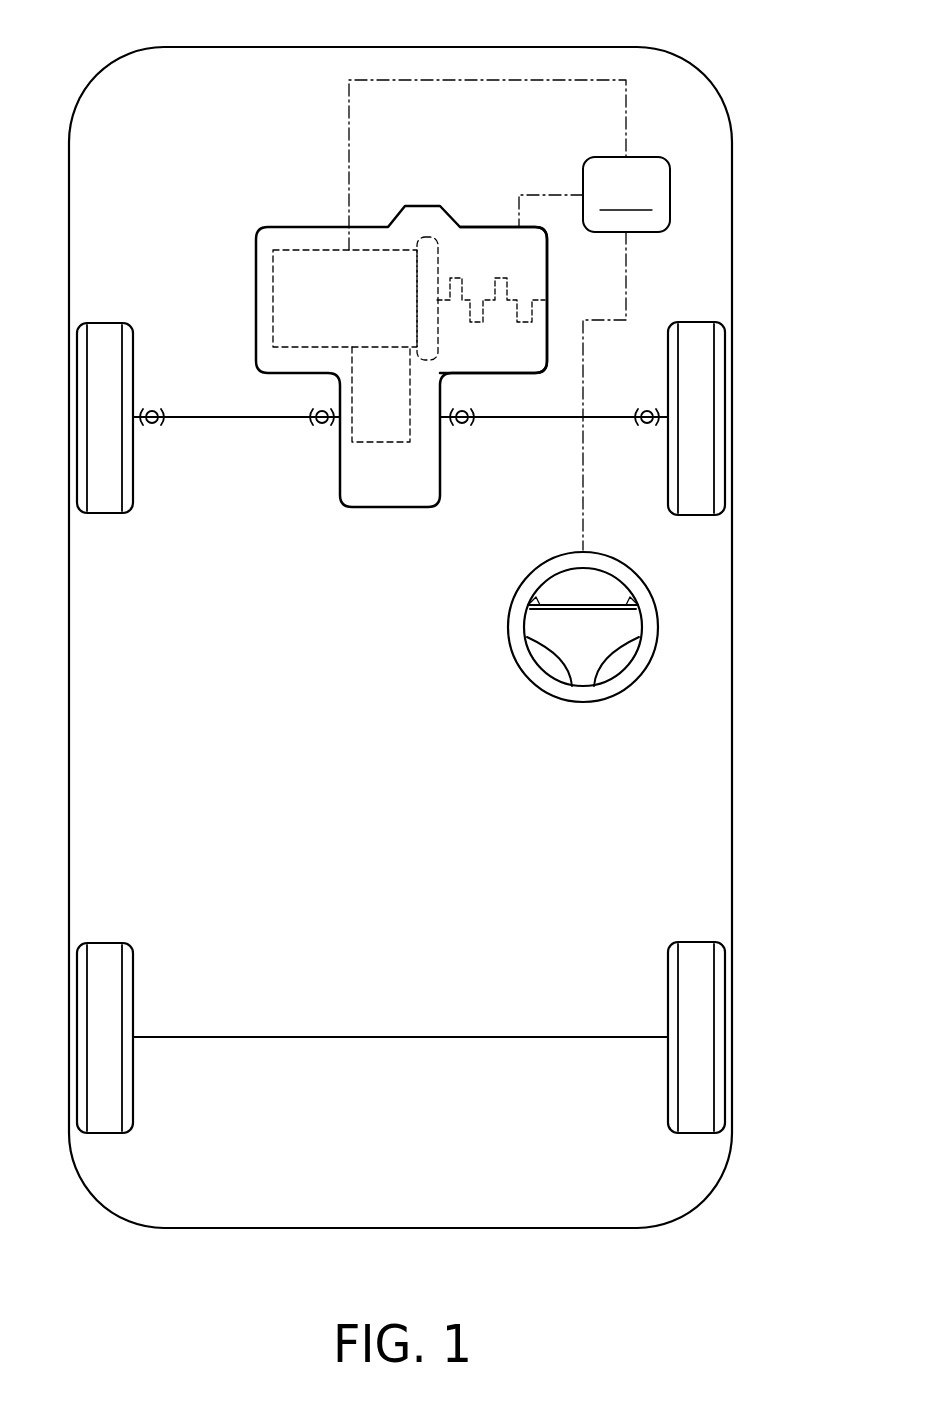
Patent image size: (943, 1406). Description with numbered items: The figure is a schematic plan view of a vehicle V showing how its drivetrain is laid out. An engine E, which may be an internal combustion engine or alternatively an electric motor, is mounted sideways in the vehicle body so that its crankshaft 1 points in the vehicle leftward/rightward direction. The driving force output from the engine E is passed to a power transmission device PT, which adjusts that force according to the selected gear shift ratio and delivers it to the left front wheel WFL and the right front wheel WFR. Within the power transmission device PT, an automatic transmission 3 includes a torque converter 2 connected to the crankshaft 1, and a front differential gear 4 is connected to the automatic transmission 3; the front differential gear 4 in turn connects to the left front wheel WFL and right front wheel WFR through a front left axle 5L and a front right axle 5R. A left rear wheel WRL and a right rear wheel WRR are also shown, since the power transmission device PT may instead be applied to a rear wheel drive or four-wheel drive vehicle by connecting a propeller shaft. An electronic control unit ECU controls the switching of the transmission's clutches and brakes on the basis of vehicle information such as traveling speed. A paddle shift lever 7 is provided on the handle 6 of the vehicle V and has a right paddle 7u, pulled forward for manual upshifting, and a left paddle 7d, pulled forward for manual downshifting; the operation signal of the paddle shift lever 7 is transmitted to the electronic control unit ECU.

The vehicle V is at (703, 65).
The power transmission device PT is at (324, 184).
The engine E is at (488, 224).
The crankshaft 1 is at (477, 325).
The torque converter 2 is at (432, 237).
The automatic transmission 3 is at (288, 250).
The front differential gear 4 is at (410, 440).
The front left axle 5L is at (268, 420).
The front right axle 5R is at (571, 420).
The handle 6 is at (524, 622).
The paddle shift lever 7 is at (514, 614).
The right paddle 7u is at (627, 600).
The left paddle 7d is at (540, 606).
The electronic control unit ECU is at (626, 194).
The left front wheel WFL is at (105, 345).
The right front wheel WFR is at (697, 335).
The left rear wheel WRL is at (105, 963).
The right rear wheel WRR is at (697, 960).